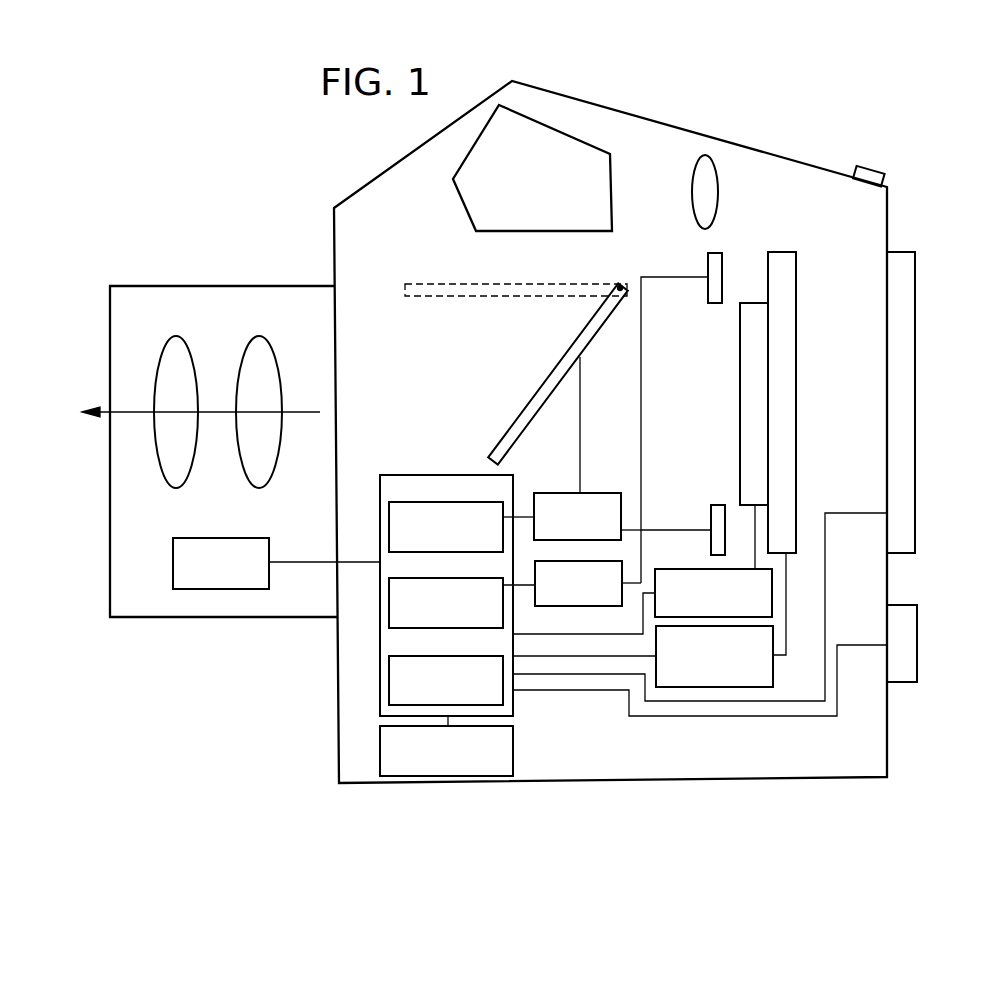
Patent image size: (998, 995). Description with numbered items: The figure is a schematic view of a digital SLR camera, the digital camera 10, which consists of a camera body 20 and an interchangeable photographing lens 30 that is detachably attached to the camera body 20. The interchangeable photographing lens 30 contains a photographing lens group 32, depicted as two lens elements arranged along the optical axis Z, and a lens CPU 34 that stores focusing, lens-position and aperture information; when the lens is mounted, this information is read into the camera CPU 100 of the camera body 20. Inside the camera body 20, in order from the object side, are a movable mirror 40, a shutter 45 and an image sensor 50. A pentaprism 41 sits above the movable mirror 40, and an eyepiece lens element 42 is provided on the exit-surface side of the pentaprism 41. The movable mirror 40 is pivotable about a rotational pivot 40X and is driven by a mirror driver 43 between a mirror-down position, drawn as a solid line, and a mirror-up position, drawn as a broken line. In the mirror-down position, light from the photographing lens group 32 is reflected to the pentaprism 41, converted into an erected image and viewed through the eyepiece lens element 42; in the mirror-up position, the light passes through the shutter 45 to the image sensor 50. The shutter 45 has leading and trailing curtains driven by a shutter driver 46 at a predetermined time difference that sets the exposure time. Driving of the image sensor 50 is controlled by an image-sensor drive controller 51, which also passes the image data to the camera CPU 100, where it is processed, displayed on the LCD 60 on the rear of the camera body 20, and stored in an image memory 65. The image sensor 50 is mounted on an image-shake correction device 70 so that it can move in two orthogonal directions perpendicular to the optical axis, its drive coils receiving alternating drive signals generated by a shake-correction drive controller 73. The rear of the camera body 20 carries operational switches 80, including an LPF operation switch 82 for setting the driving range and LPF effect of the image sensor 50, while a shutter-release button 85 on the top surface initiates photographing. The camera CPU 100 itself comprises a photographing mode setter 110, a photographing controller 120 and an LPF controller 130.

The digital camera 10 is at (262, 141).
The camera body 20 is at (808, 165).
The interchangeable photographing lens 30 is at (139, 285).
The photographing lens group 32 is at (177, 337).
The lens CPU 34 is at (244, 538).
The movable mirror 40 is at (442, 283).
The rotational pivot 40X is at (615, 282).
The pentaprism 41 is at (612, 175).
The eyepiece lens element 42 is at (694, 208).
The mirror driver 43 is at (603, 493).
The shutter 45 is at (716, 303).
The shutter driver 46 is at (541, 600).
The image sensor 50 is at (740, 390).
The image-sensor drive controller 51 is at (693, 569).
The LCD 60 is at (902, 252).
The image memory 65 is at (514, 745).
The image-shake correction device 70 is at (781, 252).
The shake-correction drive controller 73 is at (774, 670).
The operational switches 80 is at (906, 605).
The LPF operation switch 82 is at (902, 643).
The shutter-release button 85 is at (873, 167).
The camera CPU 100 is at (431, 475).
The photographing mode setter 110 is at (460, 502).
The photographing controller 120 is at (460, 578).
The LPF controller 130 is at (460, 656).